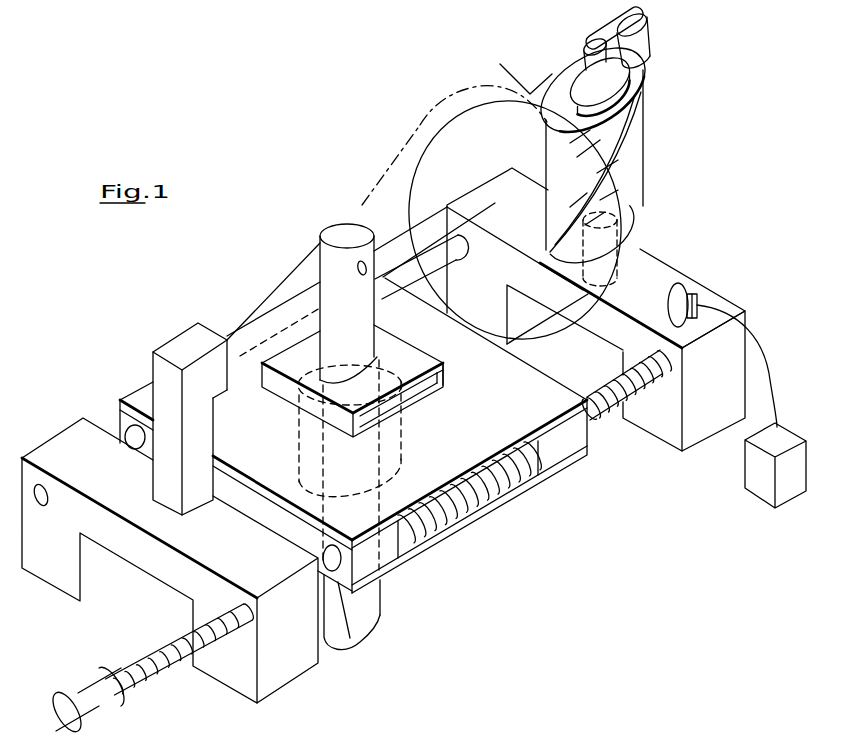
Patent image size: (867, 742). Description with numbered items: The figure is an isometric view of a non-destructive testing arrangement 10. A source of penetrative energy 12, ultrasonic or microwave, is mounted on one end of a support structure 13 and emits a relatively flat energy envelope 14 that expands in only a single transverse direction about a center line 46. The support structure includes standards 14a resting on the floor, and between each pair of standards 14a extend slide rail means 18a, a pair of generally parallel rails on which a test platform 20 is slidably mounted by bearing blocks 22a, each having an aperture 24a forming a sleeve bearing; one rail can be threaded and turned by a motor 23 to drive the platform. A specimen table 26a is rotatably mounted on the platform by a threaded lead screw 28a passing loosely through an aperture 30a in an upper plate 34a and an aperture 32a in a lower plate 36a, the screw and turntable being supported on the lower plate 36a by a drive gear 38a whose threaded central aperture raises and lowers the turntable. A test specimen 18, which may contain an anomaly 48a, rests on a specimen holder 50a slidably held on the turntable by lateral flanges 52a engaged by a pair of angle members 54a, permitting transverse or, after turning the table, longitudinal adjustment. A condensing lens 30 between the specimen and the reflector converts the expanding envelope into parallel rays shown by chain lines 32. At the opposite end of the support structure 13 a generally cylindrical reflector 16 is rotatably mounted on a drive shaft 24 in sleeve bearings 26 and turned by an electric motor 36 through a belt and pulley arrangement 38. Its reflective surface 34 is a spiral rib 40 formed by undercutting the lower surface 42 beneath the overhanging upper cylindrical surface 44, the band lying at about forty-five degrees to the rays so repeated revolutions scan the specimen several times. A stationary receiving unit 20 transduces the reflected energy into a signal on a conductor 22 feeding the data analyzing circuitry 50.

The testing arrangement 10 is at (733, 121).
The source of penetrative energy 12 is at (185, 340).
The support structure 13 is at (657, 258).
The energy envelope 14 is at (263, 310).
The standards 14a is at (662, 445).
The reflector 16 is at (636, 222).
The test specimen 18 is at (320, 234).
The slide rail means 18a is at (118, 432).
The test platform 20 is at (680, 287).
The conductor 22 is at (753, 330).
The bearing block 22a is at (365, 558).
The motor 23 is at (100, 720).
The drive shaft 24 is at (578, 65).
The aperture 24a is at (347, 647).
The sleeve bearing 26 is at (612, 80).
The specimen table 26a is at (433, 400).
The threaded lead screw 28a is at (383, 602).
The condensing lens 30 is at (418, 125).
The aperture 30a is at (421, 373).
The chain lines 32 is at (510, 74).
The aperture 32a is at (395, 468).
The reflective surface 34 is at (607, 170).
The upper plate 34a is at (533, 387).
The electric motor 36 is at (646, 42).
The lower plate 36a is at (472, 523).
The belt and pulley arrangement 38 is at (607, 23).
The drive gear 38a is at (300, 457).
The spiral rib 40 is at (627, 141).
The undercut lower surface 42 is at (627, 200).
The overhanging upper cylindrical surface 44 is at (617, 117).
The center line 46 is at (240, 360).
The anomaly 48a is at (366, 266).
The data analyzing circuitry 50 is at (750, 477).
The specimen holder 50a is at (410, 390).
The lateral flanges 52a is at (447, 387).
The angle members 54a is at (433, 372).